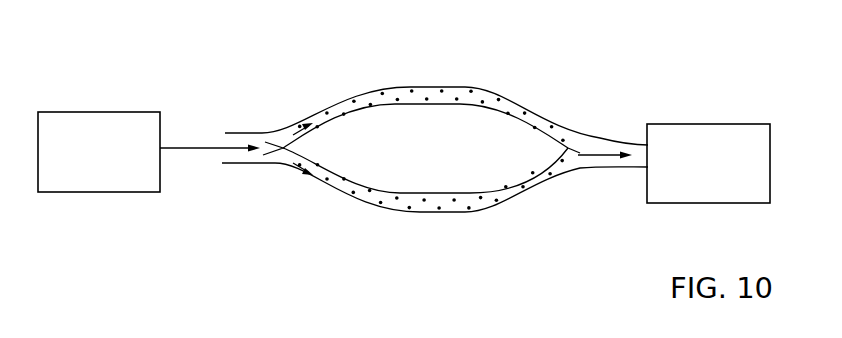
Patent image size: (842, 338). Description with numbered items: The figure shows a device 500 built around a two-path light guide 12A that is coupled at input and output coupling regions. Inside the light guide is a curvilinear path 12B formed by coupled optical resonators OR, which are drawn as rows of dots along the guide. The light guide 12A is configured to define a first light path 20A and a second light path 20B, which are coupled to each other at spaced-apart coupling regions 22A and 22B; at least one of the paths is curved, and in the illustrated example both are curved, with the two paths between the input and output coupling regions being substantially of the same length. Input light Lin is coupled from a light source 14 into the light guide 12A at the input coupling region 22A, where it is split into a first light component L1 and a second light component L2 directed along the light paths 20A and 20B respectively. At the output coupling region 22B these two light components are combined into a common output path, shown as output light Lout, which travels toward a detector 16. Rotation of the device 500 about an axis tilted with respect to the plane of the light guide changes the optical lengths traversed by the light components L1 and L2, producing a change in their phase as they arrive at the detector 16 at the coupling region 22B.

The light source 14 is at (88, 112).
The detector 16 is at (722, 124).
The device 500 is at (459, 141).
The light guide 12A is at (402, 85).
The curvilinear path 12B is at (360, 215).
The first light path 20A is at (472, 87).
The second light path 20B is at (490, 212).
The input coupling region 22A is at (278, 150).
The output coupling region 22B is at (574, 143).
The optical resonators OR is at (453, 212).
The input light Lin is at (210, 137).
The output light Lout is at (598, 155).
The first light component L1 is at (288, 137).
The second light component L2 is at (277, 190).